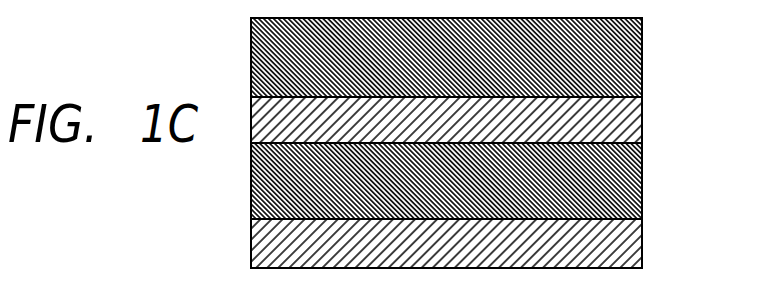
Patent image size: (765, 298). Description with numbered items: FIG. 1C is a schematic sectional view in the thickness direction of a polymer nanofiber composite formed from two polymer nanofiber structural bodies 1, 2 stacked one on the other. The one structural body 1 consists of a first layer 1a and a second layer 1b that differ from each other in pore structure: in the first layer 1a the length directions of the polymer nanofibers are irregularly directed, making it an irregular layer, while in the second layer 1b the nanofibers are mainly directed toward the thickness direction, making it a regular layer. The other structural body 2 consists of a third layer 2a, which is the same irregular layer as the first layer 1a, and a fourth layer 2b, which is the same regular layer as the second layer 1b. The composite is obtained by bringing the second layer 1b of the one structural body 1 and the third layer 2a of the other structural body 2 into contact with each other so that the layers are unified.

The polymer nanofiber structural body 1 is at (497, 80).
The first layer 1a is at (630, 53).
The second layer 1b is at (478, 120).
The polymer nanofiber structural body 2 is at (497, 205).
The third layer 2a is at (630, 184).
The fourth layer 2b is at (478, 243).